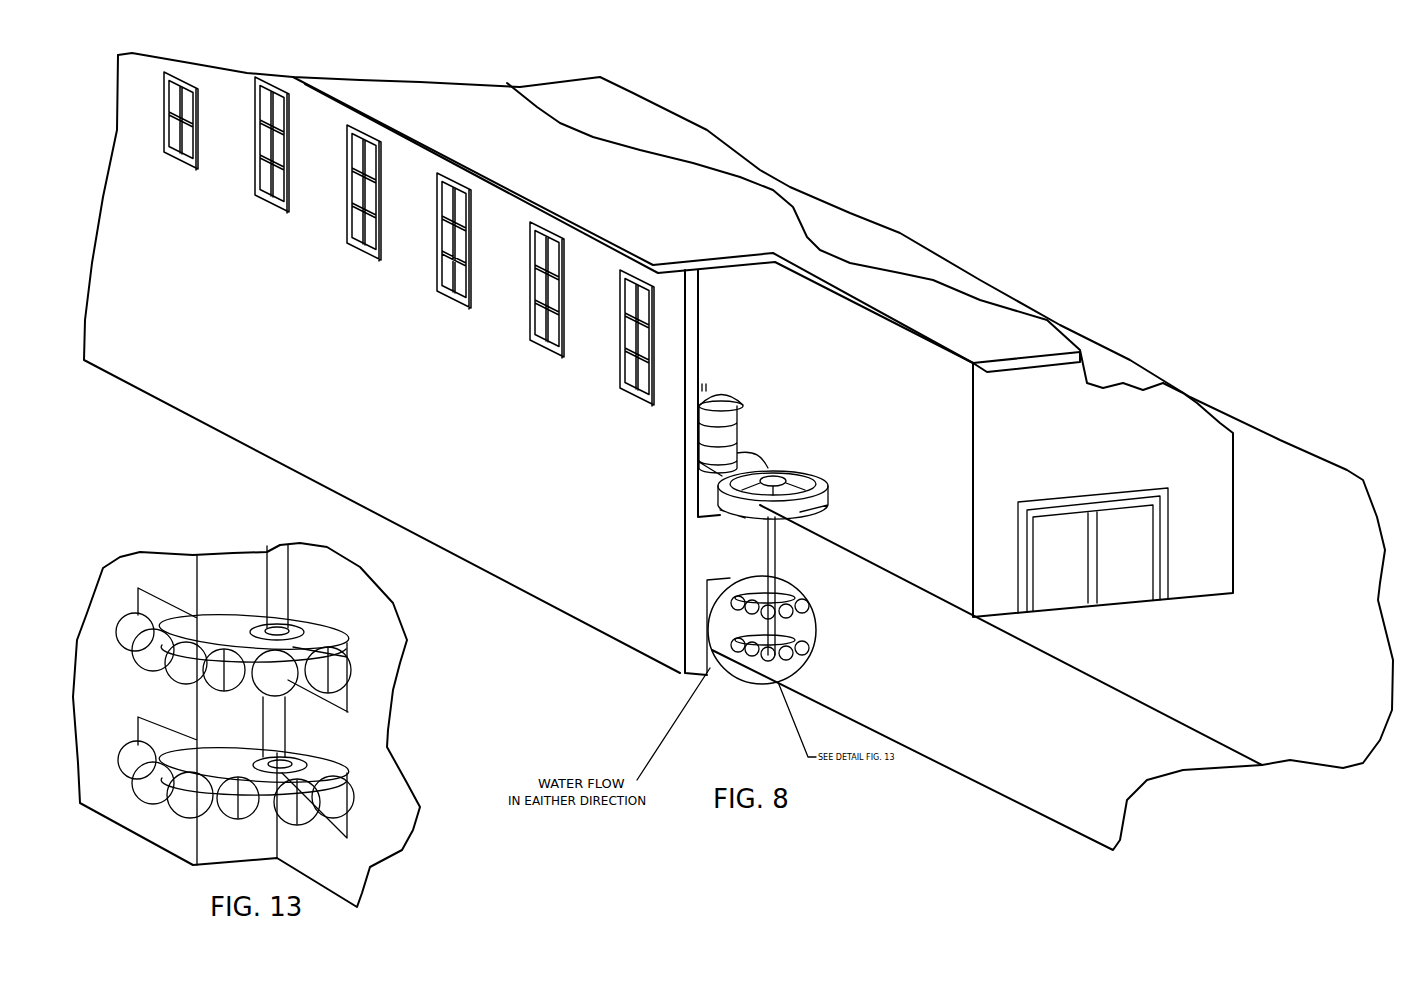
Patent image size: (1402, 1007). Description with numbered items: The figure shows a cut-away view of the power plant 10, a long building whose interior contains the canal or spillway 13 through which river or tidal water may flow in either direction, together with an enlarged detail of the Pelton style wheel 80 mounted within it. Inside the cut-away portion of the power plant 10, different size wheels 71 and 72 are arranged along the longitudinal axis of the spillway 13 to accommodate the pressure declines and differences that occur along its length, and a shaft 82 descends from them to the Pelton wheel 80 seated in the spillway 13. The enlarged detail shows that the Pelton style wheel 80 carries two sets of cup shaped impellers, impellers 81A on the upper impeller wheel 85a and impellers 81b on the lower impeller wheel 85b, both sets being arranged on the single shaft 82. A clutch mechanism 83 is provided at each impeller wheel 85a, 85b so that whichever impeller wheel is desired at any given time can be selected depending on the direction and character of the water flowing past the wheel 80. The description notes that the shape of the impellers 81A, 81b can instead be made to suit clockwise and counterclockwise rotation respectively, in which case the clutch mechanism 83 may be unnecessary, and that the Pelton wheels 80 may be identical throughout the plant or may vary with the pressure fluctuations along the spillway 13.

In FIG. 8, the power plant 10 is at (757, 197).
In FIG. 8, the spillway 13 is at (710, 588).
In FIG. 8, the water wheel 71 is at (737, 397).
In FIG. 8, the water wheel 72 is at (815, 470).
In FIG. 8, the Pelton style wheel 80 is at (773, 615).
In FIG. 8, the shaft 82 is at (765, 543).
In FIG. 13, the shaft 82 is at (275, 723).
In FIG. 13, the clutch mechanism 83 is at (297, 628).
In FIG. 13, the impeller 81A is at (170, 662).
In FIG. 13, the impeller 81b is at (182, 810).
In FIG. 13, the impeller wheel 85a is at (255, 668).
In FIG. 13, the impeller wheel 85b is at (327, 798).